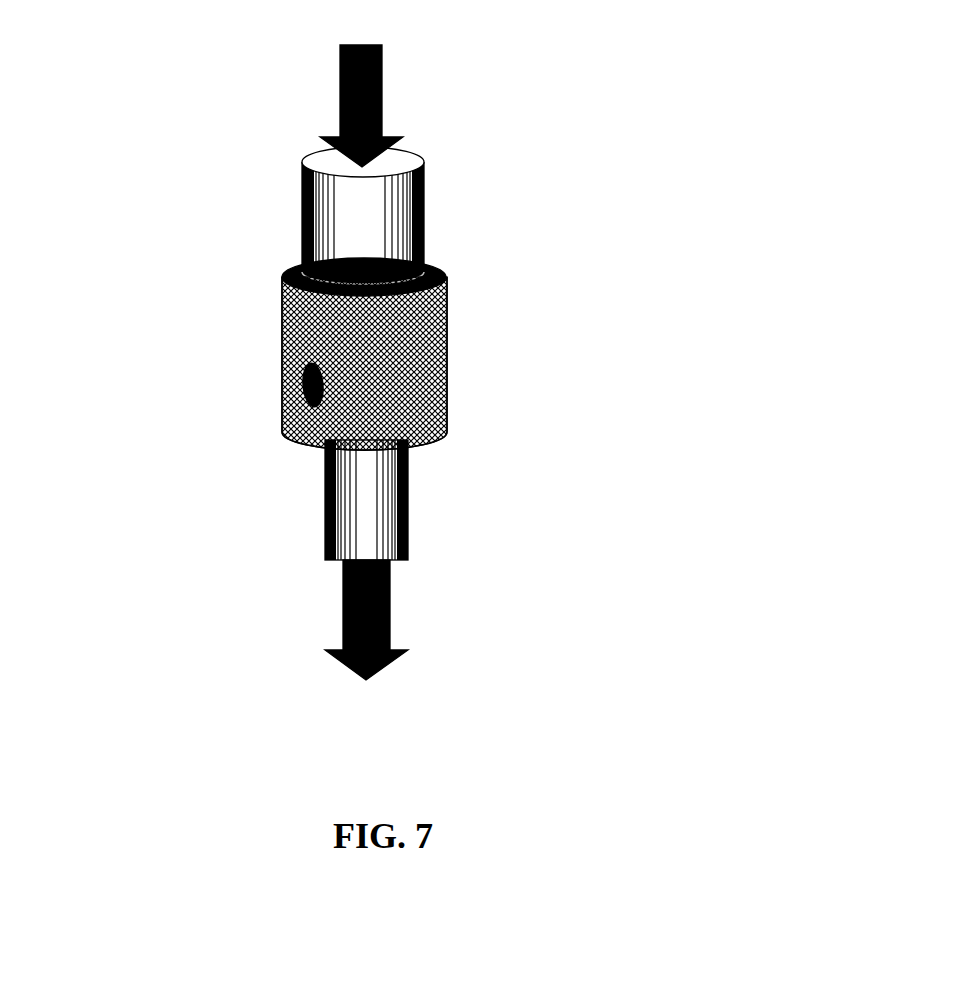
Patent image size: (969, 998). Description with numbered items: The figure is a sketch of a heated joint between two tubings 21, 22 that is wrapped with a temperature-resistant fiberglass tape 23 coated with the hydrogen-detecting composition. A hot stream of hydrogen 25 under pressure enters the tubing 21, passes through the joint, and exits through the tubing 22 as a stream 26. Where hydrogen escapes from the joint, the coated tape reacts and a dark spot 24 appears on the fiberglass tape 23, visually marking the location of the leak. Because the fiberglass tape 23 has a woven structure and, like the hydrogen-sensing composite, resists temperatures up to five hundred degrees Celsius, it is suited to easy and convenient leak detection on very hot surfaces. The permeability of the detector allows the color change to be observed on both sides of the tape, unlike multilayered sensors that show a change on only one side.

The tubing 21 is at (383, 213).
The tubing 22 is at (385, 512).
The fiberglass tape 23 is at (387, 368).
The dark spot 24 is at (305, 388).
The hot stream of hydrogen 25 is at (382, 62).
The stream 26 is at (390, 630).